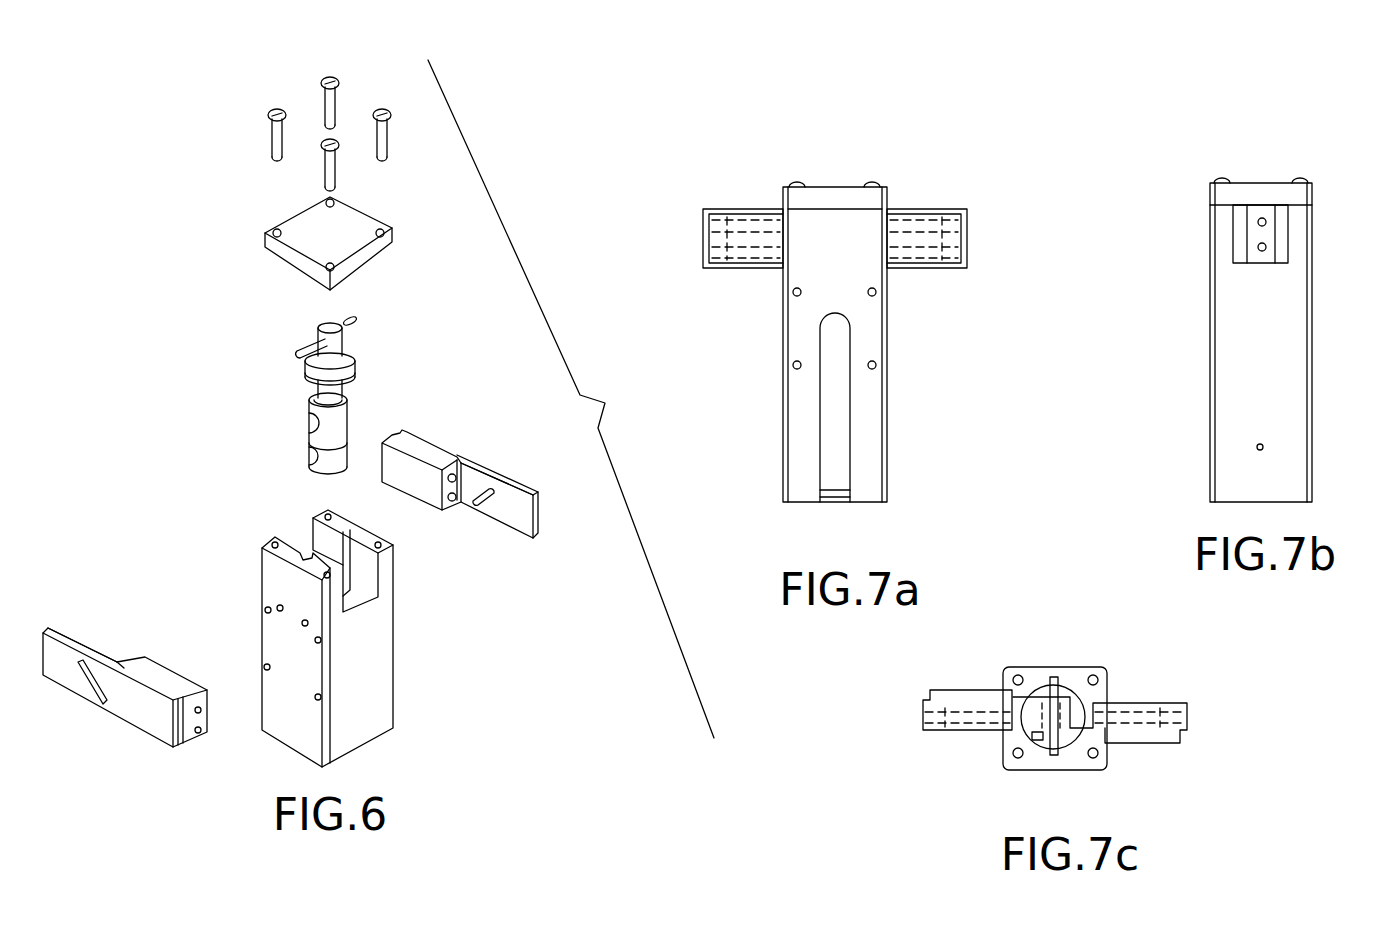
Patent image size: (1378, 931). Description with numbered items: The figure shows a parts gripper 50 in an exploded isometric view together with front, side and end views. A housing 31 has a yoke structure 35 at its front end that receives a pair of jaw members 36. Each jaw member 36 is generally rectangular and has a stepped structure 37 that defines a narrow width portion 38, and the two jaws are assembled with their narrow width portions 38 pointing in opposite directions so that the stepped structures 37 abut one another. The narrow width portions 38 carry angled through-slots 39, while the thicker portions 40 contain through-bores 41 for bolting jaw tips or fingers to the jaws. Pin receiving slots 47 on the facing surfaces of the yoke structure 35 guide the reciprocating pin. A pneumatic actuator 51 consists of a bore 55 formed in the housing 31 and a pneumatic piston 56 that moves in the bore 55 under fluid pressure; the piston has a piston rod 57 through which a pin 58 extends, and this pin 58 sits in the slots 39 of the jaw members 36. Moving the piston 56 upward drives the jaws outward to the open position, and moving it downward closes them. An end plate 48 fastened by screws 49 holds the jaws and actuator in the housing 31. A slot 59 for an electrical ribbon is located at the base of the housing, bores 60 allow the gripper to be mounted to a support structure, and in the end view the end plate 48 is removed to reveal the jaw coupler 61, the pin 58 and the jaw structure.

In FIG. 6, the housing 31 is at (370, 737).
In FIG. 7A, the housing 31 is at (888, 452).
In FIG. 7B, the housing 31 is at (1305, 405).
In FIG. 7C, the housing 31 is at (1075, 667).
In FIG. 6, the yoke structure 35 is at (292, 527).
In FIG. 6, the jaw members 36 is at (126, 738).
In FIG. 7A, the jaw members 36 is at (935, 207).
In FIG. 7B, the jaw members 36 is at (1233, 265).
In FIG. 7C, the jaw members 36 is at (1165, 703).
In FIG. 6, the stepped structure 37 is at (127, 667).
In FIG. 6, the narrow width portion 38 is at (68, 633).
In FIG. 6, the angled through-slots 39 is at (85, 703).
In FIG. 6, the thicker portions 40 is at (173, 672).
In FIG. 6, the through-bores 41 is at (201, 710).
In FIG. 7A, the through-bores 41 is at (682, 218).
In FIG. 7B, the through-bores 41 is at (1268, 222).
In FIG. 7C, the through-bores 41 is at (1190, 720).
In FIG. 6, the pin receiving slots 47 is at (360, 523).
In FIG. 6, the end plate 48 is at (385, 225).
In FIG. 7A, the end plate 48 is at (832, 187).
In FIG. 7B, the end plate 48 is at (1208, 195).
In FIG. 6, the screws 49 is at (340, 92).
In FIG. 7A, the screws 49 is at (792, 184).
In FIG. 7B, the screws 49 is at (1220, 180).
In FIG. 7C, the screws 49 is at (1015, 675).
In FIG. 6, the parts gripper 50 is at (560, 630).
In FIG. 7A, the parts gripper 50 is at (998, 345).
In FIG. 6, the pneumatic actuator 51 is at (308, 440).
In FIG. 6, the bore 55 is at (355, 582).
In FIG. 6, the pneumatic piston 56 is at (358, 362).
In FIG. 6, the piston rod 57 is at (345, 336).
In FIG. 6, the pin 58 is at (300, 351).
In FIG. 7C, the pin 58 is at (1055, 675).
In FIG. 7A, the slot 59 is at (823, 500).
In FIG. 7A, the bores 60 is at (792, 297).
In FIG. 7C, the jaw coupler 61 is at (1040, 742).